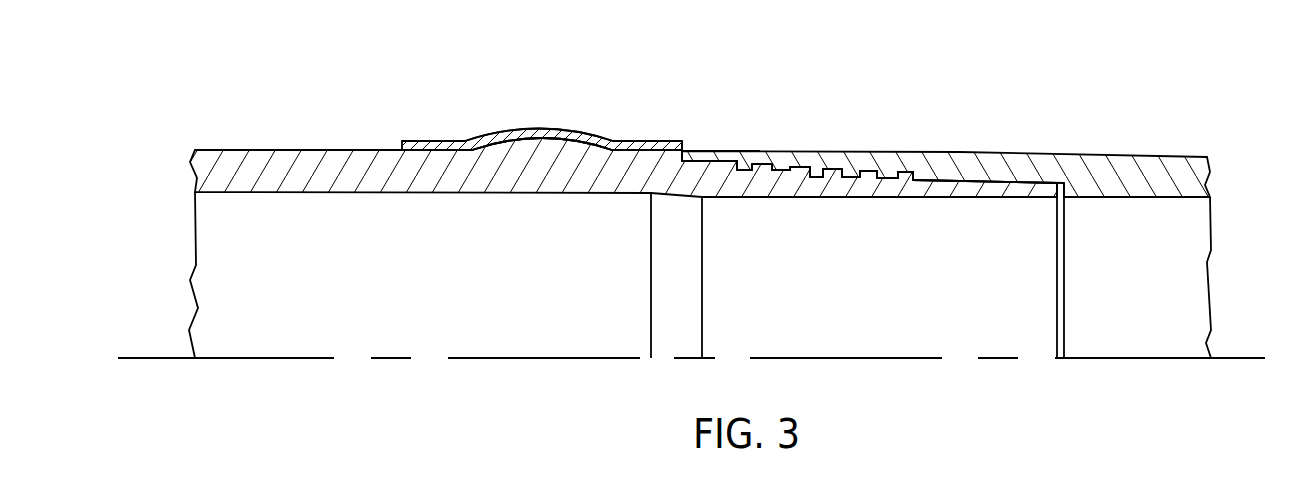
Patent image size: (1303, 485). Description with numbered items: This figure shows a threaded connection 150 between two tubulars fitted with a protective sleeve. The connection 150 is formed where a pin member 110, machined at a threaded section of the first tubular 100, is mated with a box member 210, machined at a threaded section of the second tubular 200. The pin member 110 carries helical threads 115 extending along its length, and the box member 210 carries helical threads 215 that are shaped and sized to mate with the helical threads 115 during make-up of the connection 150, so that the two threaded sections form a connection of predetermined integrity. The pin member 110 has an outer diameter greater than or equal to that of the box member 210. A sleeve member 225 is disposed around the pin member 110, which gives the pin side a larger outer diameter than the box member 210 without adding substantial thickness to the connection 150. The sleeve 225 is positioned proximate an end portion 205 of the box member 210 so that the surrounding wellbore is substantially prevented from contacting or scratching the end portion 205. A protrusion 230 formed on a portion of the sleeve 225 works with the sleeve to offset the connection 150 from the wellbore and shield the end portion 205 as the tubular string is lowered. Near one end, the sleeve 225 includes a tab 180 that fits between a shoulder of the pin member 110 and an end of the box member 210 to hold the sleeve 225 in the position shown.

The first tubular 100 is at (293, 167).
The pin member 110 is at (922, 190).
The helical threads 115 is at (812, 178).
The threaded connection 150 is at (673, 95).
The tab 180 is at (678, 155).
The second tubular 200 is at (1162, 176).
The end portion 205 is at (702, 158).
The box member 210 is at (995, 170).
The helical threads 215 is at (917, 171).
The sleeve member 225 is at (633, 141).
The protrusion 230 is at (539, 127).